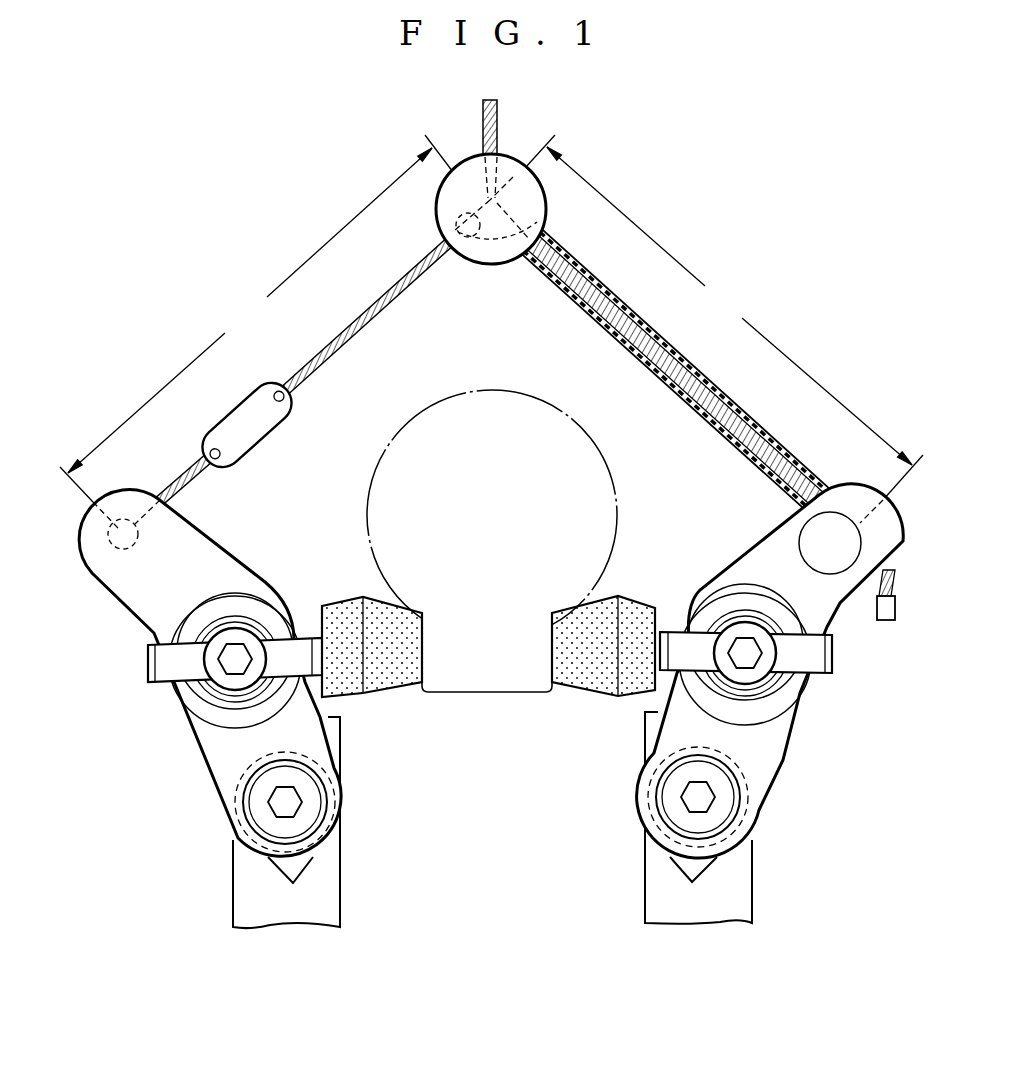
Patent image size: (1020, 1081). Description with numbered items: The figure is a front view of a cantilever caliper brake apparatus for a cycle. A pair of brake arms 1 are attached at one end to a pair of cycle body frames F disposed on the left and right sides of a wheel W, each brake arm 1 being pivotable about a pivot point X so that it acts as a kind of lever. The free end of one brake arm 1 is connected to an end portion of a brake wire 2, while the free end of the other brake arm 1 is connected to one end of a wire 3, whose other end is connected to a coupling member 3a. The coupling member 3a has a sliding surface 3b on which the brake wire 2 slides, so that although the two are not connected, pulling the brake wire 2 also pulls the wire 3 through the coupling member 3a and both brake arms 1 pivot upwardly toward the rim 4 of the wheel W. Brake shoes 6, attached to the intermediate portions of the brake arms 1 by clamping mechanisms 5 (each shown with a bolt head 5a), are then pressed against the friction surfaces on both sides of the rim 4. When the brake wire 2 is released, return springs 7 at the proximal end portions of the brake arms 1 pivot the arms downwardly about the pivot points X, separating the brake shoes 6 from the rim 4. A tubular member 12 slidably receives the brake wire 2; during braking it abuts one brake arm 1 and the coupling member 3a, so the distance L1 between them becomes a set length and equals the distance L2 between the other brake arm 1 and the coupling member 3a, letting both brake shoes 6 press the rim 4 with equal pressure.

The brake arm 1 is at (140, 490).
The brake wire 2 is at (498, 123).
The wire 3 is at (357, 320).
The coupling member 3a is at (492, 252).
The sliding surface 3b is at (500, 214).
The rim 4 is at (502, 694).
The clamping mechanism 5 is at (257, 607).
The pivot bolt head 5a is at (223, 677).
The brake shoe 6 is at (384, 686).
The return spring 7 is at (337, 806).
The tubular member 12 is at (755, 413).
The wheel W is at (531, 393).
The pivot point X is at (285, 802).
The cycle body frame F is at (325, 893).
The distance L1 is at (724, 317).
The distance L2 is at (256, 318).